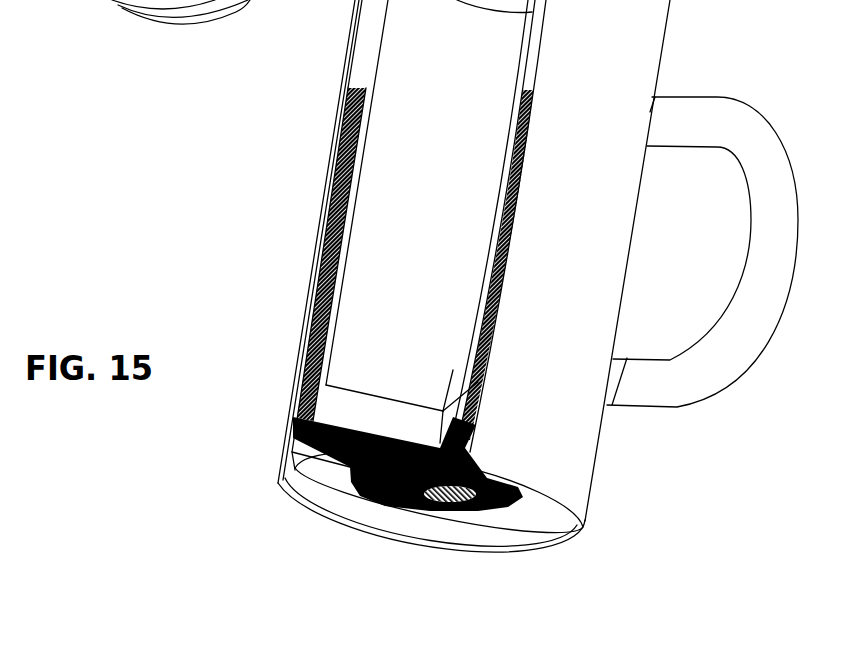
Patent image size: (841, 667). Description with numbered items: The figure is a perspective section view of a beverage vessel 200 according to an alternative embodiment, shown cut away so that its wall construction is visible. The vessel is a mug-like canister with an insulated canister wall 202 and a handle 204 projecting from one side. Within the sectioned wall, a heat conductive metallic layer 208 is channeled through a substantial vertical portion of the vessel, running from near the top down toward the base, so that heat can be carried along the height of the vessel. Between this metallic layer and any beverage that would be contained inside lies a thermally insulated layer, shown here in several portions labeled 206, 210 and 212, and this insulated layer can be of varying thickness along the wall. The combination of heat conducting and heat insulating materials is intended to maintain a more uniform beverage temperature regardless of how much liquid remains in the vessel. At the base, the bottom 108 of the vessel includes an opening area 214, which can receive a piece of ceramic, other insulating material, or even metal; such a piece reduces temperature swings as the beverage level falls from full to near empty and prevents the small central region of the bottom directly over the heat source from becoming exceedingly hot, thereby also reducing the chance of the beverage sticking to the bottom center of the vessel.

The beverage vessel 200 is at (119, 448).
The insulated canister wall 202 is at (630, 39).
The handle 204 is at (693, 115).
The thermally insulated layer 206 is at (360, 67).
The heat conductive metallic layer 208 is at (350, 137).
The thermally insulated layer 210 is at (303, 450).
The thermally insulated layer 212 is at (323, 407).
The opening area 214 is at (427, 497).
The bottom 108 is at (175, 0).